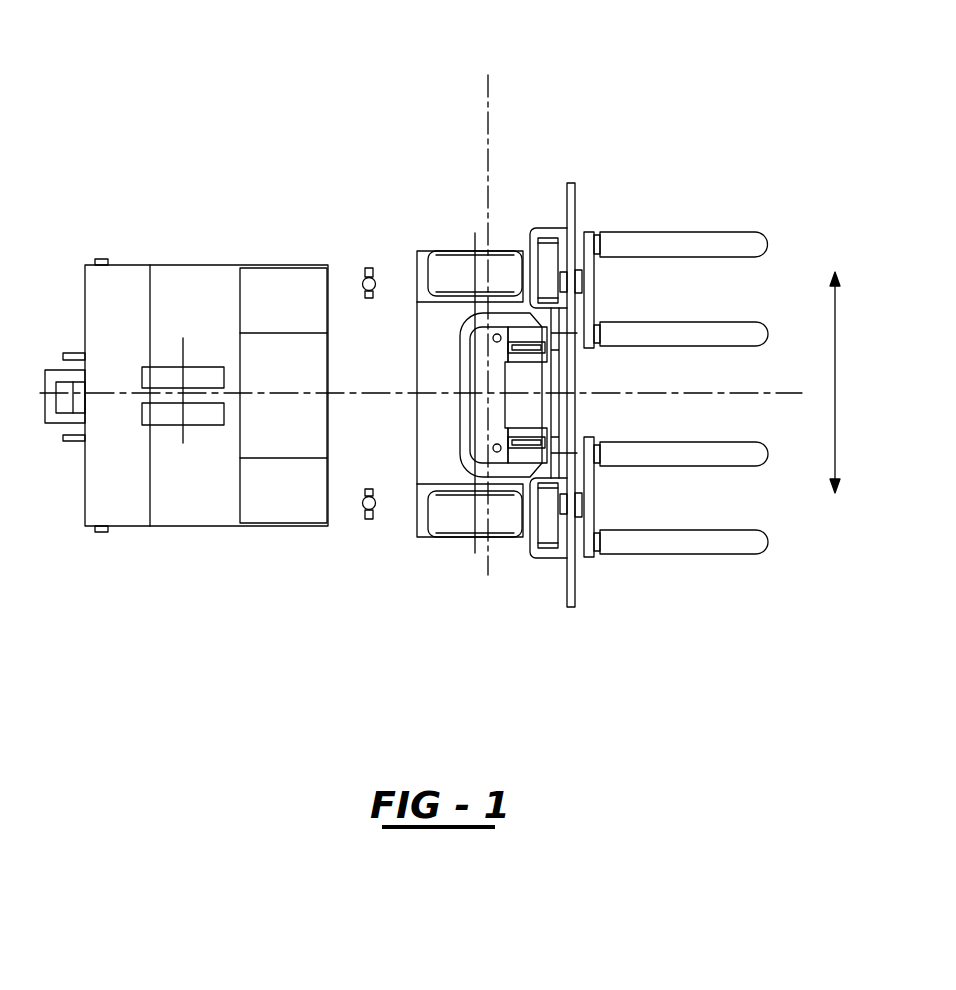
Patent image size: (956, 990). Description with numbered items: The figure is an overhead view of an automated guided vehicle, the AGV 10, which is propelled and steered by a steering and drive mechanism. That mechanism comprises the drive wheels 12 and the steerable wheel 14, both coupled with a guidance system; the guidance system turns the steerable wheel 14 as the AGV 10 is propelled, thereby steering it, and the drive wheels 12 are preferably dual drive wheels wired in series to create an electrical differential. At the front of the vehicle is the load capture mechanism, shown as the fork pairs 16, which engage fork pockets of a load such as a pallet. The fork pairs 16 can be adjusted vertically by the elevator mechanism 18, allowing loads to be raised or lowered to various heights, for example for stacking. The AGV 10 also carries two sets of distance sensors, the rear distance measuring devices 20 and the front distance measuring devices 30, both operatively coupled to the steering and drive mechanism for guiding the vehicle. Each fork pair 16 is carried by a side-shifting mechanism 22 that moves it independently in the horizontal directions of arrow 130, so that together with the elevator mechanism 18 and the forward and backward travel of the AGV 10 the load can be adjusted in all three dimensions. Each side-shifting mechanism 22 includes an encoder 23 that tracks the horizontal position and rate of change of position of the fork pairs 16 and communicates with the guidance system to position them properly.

The AGV 10 is at (207, 128).
The drive wheels 12 is at (448, 262).
The steerable wheel 14 is at (202, 427).
The fork pairs 16 is at (727, 321).
The elevator mechanism 18 is at (502, 318).
The rear distance measuring devices 20 is at (582, 275).
The side-shifting mechanism 22 is at (551, 272).
The encoder 23 is at (533, 228).
The front distance measuring devices 30 is at (365, 270).
The arrow 130 is at (835, 372).